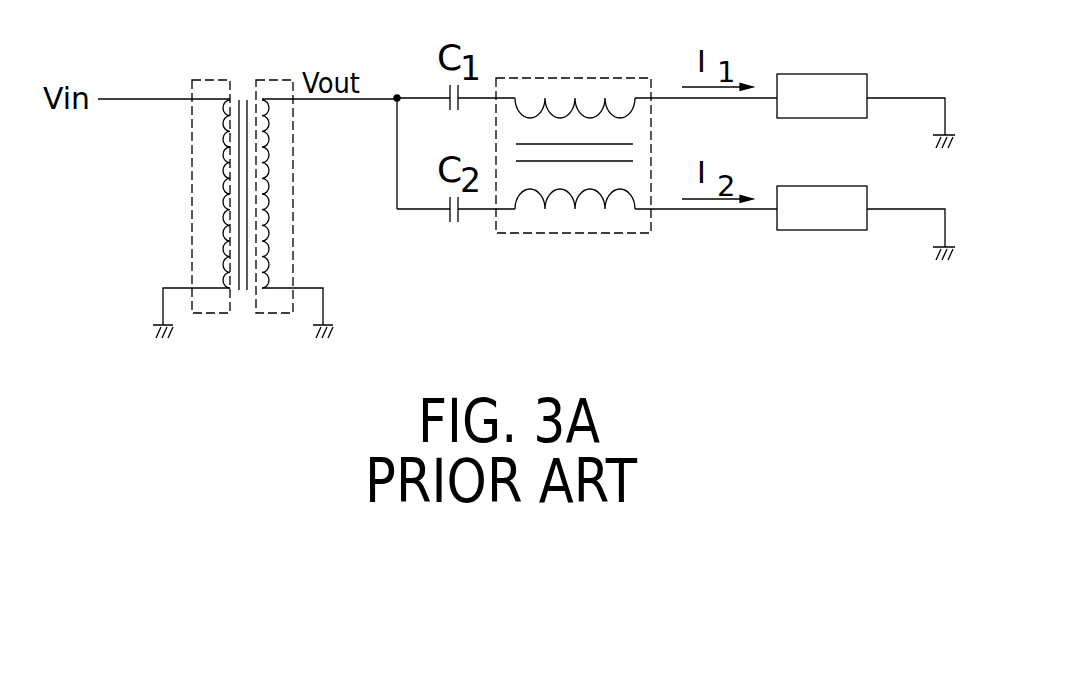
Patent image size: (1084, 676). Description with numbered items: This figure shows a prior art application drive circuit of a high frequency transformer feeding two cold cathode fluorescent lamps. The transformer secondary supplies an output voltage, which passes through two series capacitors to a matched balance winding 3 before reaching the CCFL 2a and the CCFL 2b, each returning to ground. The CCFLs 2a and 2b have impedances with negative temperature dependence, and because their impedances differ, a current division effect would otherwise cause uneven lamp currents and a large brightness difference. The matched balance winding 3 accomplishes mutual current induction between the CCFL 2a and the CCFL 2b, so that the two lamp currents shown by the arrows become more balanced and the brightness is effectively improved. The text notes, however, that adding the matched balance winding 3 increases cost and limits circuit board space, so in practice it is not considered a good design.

The matched balance winding 3 is at (574, 78).
The CCFL 2a is at (826, 74).
The CCFL 2b is at (826, 232).